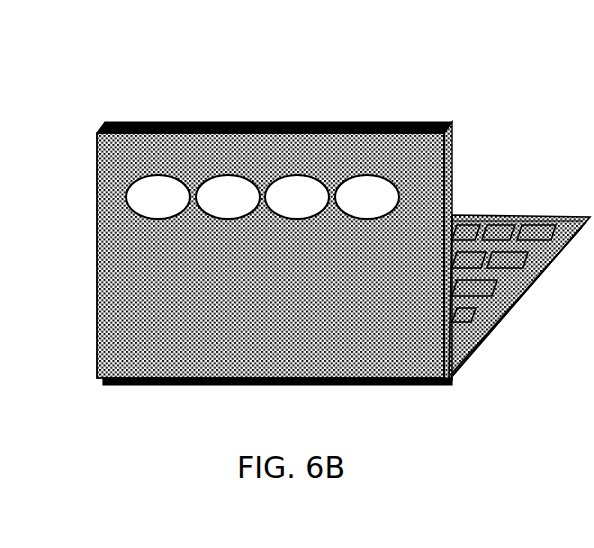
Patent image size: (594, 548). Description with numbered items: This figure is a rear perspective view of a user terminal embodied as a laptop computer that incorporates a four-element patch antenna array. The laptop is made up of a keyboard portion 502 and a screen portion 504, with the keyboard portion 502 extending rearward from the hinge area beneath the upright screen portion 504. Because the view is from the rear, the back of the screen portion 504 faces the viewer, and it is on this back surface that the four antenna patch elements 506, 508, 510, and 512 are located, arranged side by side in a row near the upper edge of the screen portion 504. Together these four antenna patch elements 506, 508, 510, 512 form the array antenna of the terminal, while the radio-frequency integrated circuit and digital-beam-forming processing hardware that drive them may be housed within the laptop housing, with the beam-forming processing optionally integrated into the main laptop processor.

The keyboard portion 502 is at (519, 308).
The screen portion 504 is at (238, 253).
The antenna patch element 506 is at (173, 124).
The antenna patch element 508 is at (245, 124).
The antenna patch element 510 is at (316, 124).
The antenna patch element 512 is at (389, 124).